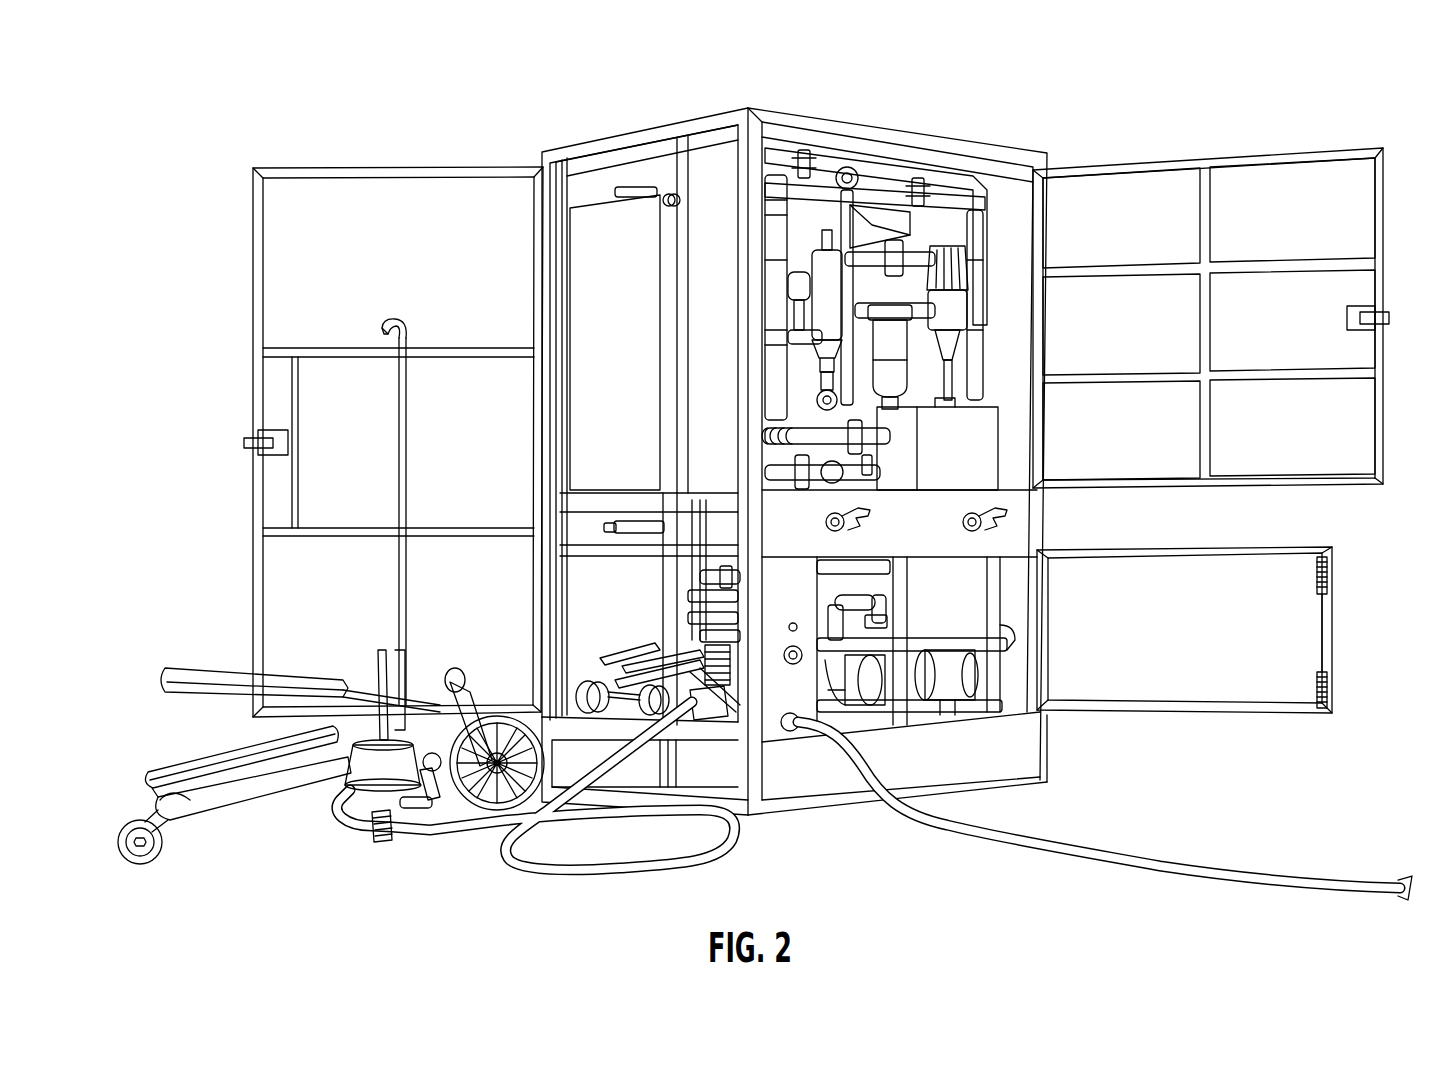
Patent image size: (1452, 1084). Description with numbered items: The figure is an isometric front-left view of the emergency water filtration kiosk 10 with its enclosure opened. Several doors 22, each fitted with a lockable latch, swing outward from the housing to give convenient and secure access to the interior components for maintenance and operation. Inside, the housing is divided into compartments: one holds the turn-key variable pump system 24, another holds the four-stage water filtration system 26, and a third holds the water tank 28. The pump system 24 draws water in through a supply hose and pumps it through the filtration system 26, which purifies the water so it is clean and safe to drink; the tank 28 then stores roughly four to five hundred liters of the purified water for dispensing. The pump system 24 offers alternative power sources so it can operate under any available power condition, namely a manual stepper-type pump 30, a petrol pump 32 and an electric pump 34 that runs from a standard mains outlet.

The emergency water filtration kiosk 10 is at (472, 70).
The door 22 is at (378, 168).
The turn-key variable pump system 24 is at (955, 583).
The four-stage water filtration system 26 is at (930, 221).
The water tank 28 is at (595, 237).
The manual pump 30 is at (358, 775).
The petrol pump 32 is at (735, 712).
The electric pump 34 is at (938, 675).